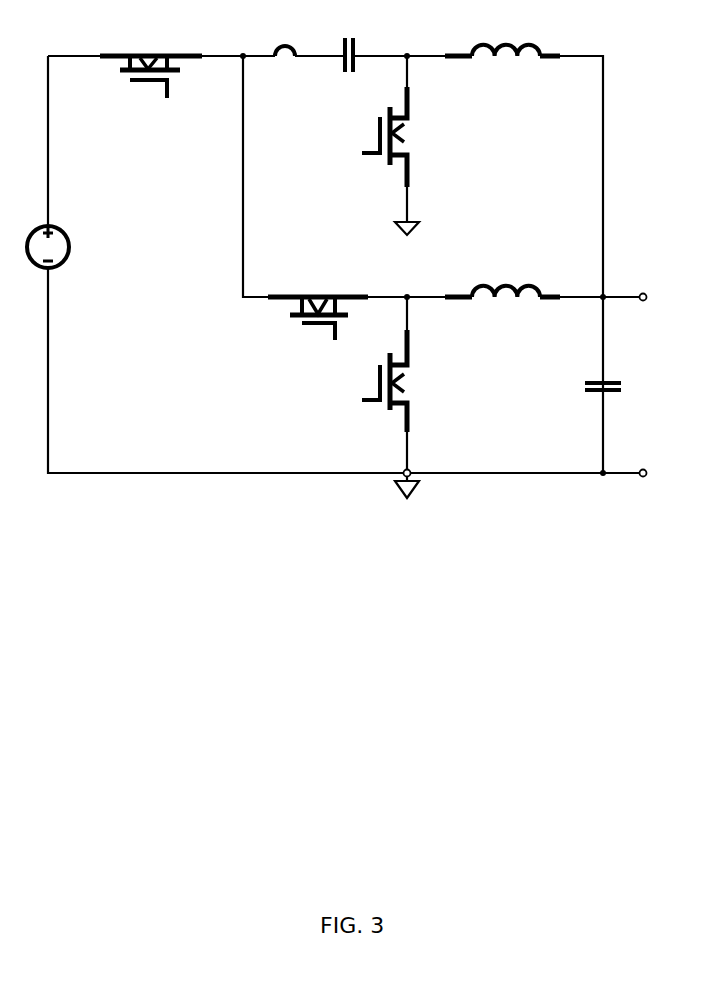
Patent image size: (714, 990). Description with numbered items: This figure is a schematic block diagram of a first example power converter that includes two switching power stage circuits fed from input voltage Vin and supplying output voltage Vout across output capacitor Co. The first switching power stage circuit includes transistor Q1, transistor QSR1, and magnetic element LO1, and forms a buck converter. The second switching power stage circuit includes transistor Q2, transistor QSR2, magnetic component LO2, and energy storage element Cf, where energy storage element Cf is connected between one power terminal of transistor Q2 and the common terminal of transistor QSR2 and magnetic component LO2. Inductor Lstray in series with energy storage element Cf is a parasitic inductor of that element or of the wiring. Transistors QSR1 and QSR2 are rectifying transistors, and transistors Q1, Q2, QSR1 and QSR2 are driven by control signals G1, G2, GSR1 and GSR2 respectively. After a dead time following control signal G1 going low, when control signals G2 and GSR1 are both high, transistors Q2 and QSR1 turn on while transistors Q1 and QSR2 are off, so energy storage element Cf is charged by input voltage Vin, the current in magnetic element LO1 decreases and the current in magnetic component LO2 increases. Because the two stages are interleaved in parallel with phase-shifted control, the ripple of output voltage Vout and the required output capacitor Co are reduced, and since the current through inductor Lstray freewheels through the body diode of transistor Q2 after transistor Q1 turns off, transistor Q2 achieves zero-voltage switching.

The input voltage Vin is at (65, 247).
The transistor Q2 is at (151, 48).
The control signal G2 is at (155, 106).
The inductor Lstray is at (285, 33).
The energy storage element Cf is at (347, 41).
The magnetic component LO2 is at (502, 34).
The transistor QSR2 is at (422, 137).
The control signal GSR2 is at (345, 141).
The transistor Q1 is at (318, 290).
The control signal G1 is at (323, 346).
The magnetic element LO1 is at (502, 278).
The transistor QSR1 is at (424, 381).
The control signal GSR1 is at (345, 388).
The output capacitor Co is at (585, 390).
The output voltage Vout is at (646, 385).